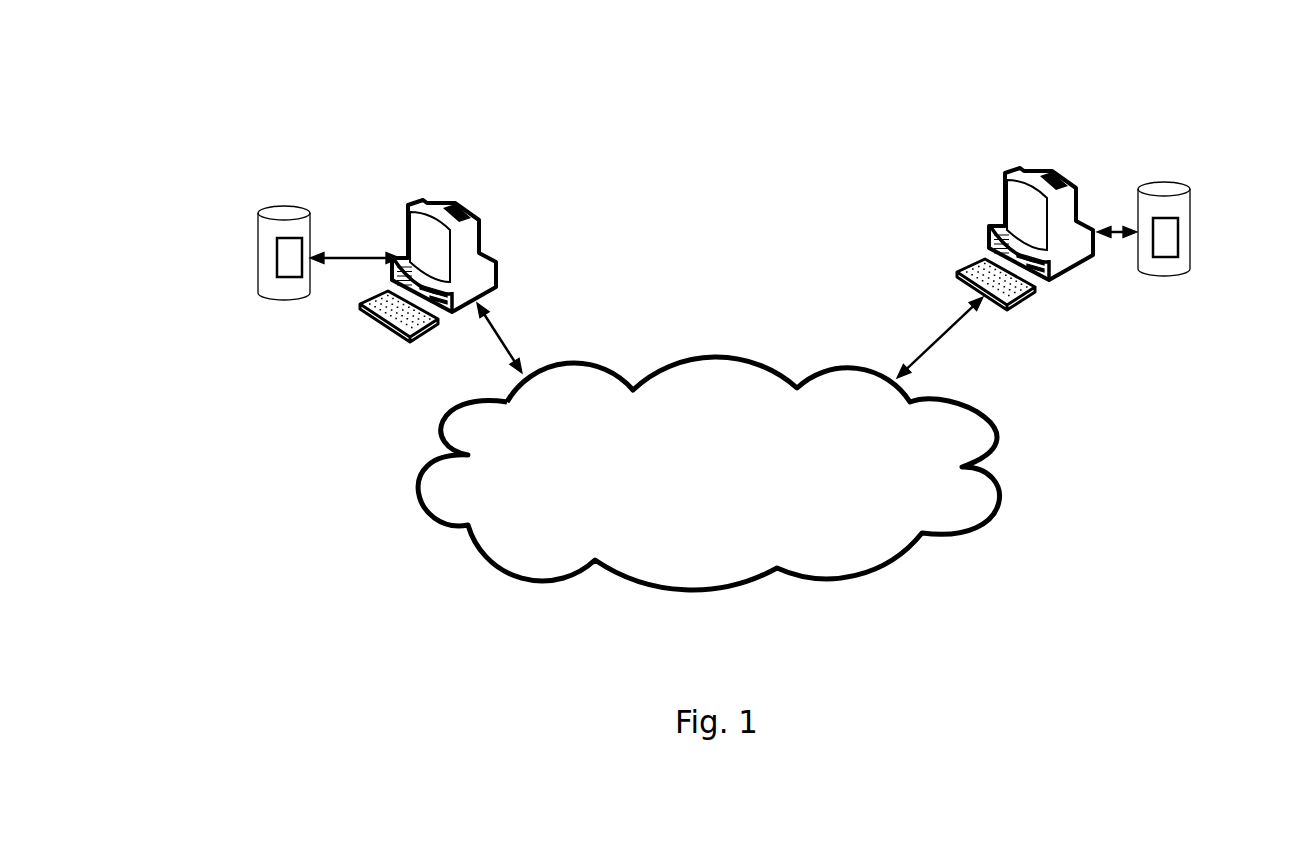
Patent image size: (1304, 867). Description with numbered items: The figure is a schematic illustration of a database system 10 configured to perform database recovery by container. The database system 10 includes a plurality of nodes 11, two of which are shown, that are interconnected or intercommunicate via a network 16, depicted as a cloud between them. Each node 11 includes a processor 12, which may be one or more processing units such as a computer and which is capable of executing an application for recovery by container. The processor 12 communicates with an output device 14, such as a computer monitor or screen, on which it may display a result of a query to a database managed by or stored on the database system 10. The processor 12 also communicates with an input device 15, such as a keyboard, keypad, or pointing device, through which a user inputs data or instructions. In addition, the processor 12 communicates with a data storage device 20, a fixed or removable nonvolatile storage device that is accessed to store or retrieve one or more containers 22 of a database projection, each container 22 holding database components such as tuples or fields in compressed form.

The database system 10 is at (402, 558).
The node 11 is at (303, 147).
The processor 12 is at (427, 203).
The output device 14 is at (428, 247).
The input device 15 is at (382, 327).
The network 16 is at (713, 353).
The data storage device 20 is at (257, 257).
The container 22 is at (285, 277).